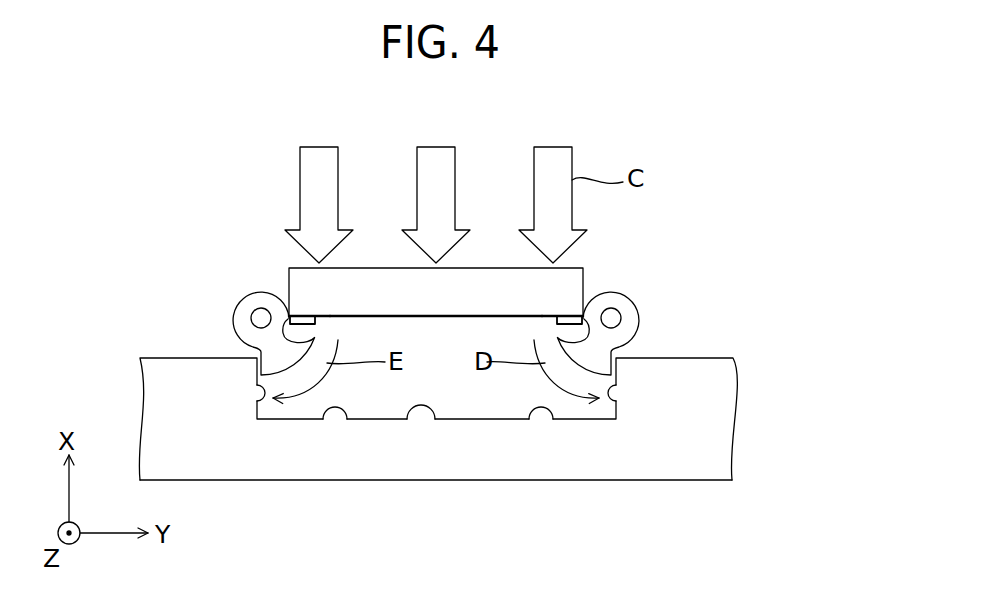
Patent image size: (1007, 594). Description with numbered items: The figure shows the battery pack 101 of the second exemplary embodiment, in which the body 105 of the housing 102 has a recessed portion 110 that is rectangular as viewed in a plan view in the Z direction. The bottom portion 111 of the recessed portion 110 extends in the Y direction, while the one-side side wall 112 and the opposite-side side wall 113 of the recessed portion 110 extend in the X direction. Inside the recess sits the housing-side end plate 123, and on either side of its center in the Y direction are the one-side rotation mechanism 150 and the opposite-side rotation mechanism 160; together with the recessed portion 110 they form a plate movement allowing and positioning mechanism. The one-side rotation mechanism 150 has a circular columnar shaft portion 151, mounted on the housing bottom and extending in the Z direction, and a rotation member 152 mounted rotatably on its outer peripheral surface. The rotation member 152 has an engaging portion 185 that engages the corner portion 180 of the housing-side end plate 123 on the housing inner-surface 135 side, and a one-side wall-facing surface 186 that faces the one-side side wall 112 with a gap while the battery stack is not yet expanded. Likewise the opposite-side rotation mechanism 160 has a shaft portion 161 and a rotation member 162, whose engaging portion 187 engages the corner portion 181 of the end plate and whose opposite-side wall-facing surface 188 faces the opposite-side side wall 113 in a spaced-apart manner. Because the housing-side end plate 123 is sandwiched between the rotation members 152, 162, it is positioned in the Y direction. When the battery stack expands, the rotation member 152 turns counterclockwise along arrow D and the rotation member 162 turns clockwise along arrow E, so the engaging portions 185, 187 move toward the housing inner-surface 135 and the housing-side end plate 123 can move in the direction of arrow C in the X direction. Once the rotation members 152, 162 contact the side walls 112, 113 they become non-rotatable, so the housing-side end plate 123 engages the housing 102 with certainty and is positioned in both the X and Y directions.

The battery pack 101 is at (620, 152).
The housing 102 is at (487, 495).
The body 105 is at (633, 483).
The recessed portion 110 is at (407, 420).
The bottom portion 111 is at (553, 420).
The one-side side wall 112 is at (612, 387).
The opposite-side side wall 113 is at (256, 390).
The housing-side end plate 123 is at (590, 273).
The housing inner-surface 135 is at (323, 420).
The one-side rotation mechanism 150 is at (627, 290).
The shaft portion 151 is at (621, 316).
The rotation member 152 is at (623, 337).
The opposite-side rotation mechanism 160 is at (248, 285).
The shaft portion 161 is at (253, 318).
The rotation member 162 is at (263, 297).
The corner portion 180 is at (560, 327).
The corner portion 181 is at (312, 327).
The engaging portion 185 is at (557, 316).
The one-side wall-facing surface 186 is at (612, 352).
The engaging portion 187 is at (310, 317).
The opposite-side wall-facing surface 188 is at (262, 371).